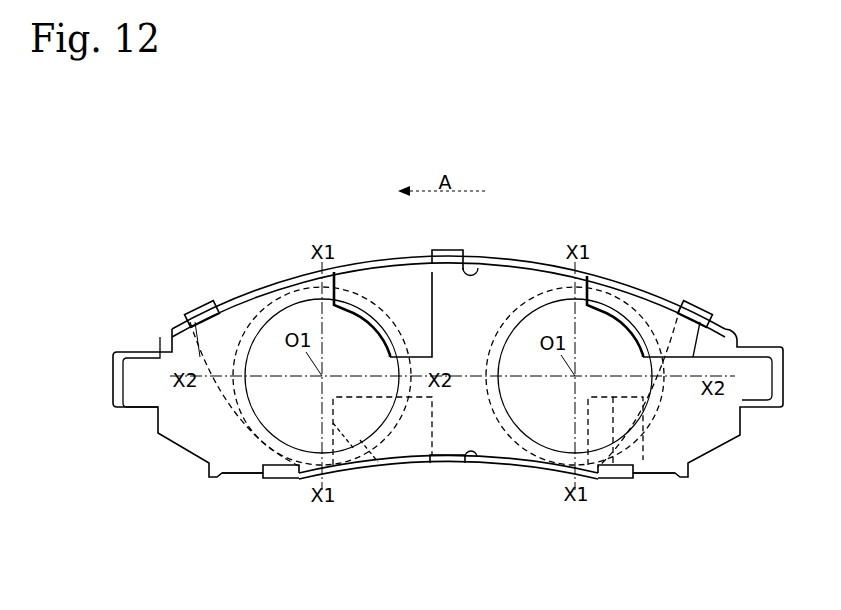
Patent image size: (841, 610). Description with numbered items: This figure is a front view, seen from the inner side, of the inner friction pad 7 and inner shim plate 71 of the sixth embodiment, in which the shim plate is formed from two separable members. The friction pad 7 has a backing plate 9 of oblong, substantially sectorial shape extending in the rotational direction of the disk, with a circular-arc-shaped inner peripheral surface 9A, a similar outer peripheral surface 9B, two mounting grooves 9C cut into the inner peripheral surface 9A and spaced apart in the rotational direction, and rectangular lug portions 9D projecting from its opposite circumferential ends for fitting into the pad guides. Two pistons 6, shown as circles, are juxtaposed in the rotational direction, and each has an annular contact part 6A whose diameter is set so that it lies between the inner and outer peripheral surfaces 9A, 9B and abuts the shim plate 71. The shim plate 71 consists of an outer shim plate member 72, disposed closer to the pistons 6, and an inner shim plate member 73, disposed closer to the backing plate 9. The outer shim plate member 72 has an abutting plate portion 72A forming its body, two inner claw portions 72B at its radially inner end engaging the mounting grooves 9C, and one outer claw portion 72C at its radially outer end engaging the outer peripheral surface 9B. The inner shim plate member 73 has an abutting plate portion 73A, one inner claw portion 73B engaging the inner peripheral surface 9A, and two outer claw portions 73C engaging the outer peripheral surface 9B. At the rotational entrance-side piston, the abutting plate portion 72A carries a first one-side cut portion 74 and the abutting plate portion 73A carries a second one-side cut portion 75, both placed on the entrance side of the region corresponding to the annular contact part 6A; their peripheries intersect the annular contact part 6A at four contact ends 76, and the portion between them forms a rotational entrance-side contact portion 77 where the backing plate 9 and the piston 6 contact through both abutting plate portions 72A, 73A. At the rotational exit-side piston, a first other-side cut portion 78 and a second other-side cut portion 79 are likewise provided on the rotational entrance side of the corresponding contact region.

The piston 6 is at (267, 290).
The annular contact part 6A is at (297, 272).
The friction pad 7 is at (733, 331).
The backing plate 9 is at (177, 434).
The inner peripheral surface 9A is at (482, 458).
The outer peripheral surface 9B is at (227, 296).
The mounting groove 9C is at (238, 474).
The lug portion 9D is at (128, 360).
The inner shim plate 71 is at (518, 263).
The outer shim plate member 72 is at (503, 277).
The abutting plate portion 72A is at (523, 461).
The inner claw portion 72B is at (279, 479).
The outer claw portion 72C is at (455, 248).
The inner shim plate member 73 is at (662, 354).
The abutting plate portion 73A is at (408, 273).
The inner claw portion 73B is at (450, 464).
The outer claw portion 73C is at (197, 308).
The first one-side cut portion 74 is at (657, 313).
The second one-side cut portion 75 is at (613, 477).
The contact end 76 is at (341, 303).
The rotational entrance-side contact portion 77 is at (422, 462).
The first other-side cut portion 78 is at (350, 306).
The second other-side cut portion 79 is at (380, 464).